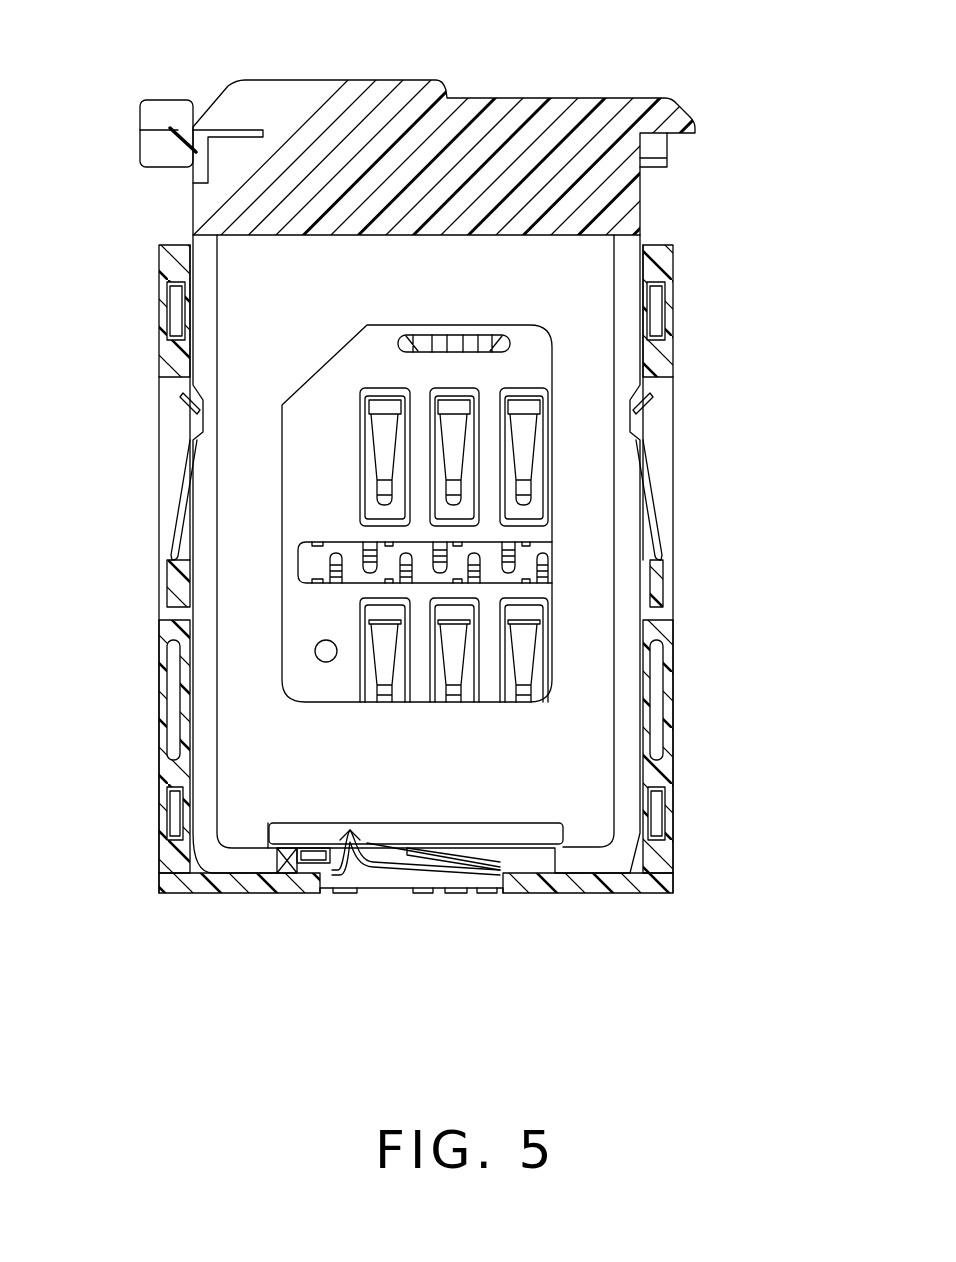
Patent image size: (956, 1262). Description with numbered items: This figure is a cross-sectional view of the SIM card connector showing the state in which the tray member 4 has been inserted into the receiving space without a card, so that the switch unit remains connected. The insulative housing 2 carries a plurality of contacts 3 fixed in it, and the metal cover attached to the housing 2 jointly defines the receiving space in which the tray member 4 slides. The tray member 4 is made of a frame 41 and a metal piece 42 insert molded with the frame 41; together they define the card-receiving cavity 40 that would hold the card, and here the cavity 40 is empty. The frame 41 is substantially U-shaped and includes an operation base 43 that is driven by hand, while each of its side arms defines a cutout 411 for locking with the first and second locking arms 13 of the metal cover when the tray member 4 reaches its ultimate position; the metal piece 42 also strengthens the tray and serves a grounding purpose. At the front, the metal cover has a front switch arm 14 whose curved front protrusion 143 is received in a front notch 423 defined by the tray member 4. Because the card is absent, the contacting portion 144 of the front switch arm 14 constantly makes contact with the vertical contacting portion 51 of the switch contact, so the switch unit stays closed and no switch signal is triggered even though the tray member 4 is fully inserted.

The insulative housing 2 is at (660, 858).
The contacts 3 is at (520, 437).
The tray member 4 is at (538, 142).
The locking arms 13 is at (176, 482).
The front switch arm 14 is at (390, 867).
The card-receiving cavity 40 is at (325, 405).
The frame 41 is at (620, 782).
The metal piece 42 is at (550, 790).
The operation base 43 is at (603, 190).
The contacting portion 51 is at (310, 865).
The front protrusion 143 is at (352, 845).
The contacting portion 144 is at (320, 868).
The cutout 411 is at (193, 395).
The front notch 423 is at (440, 828).